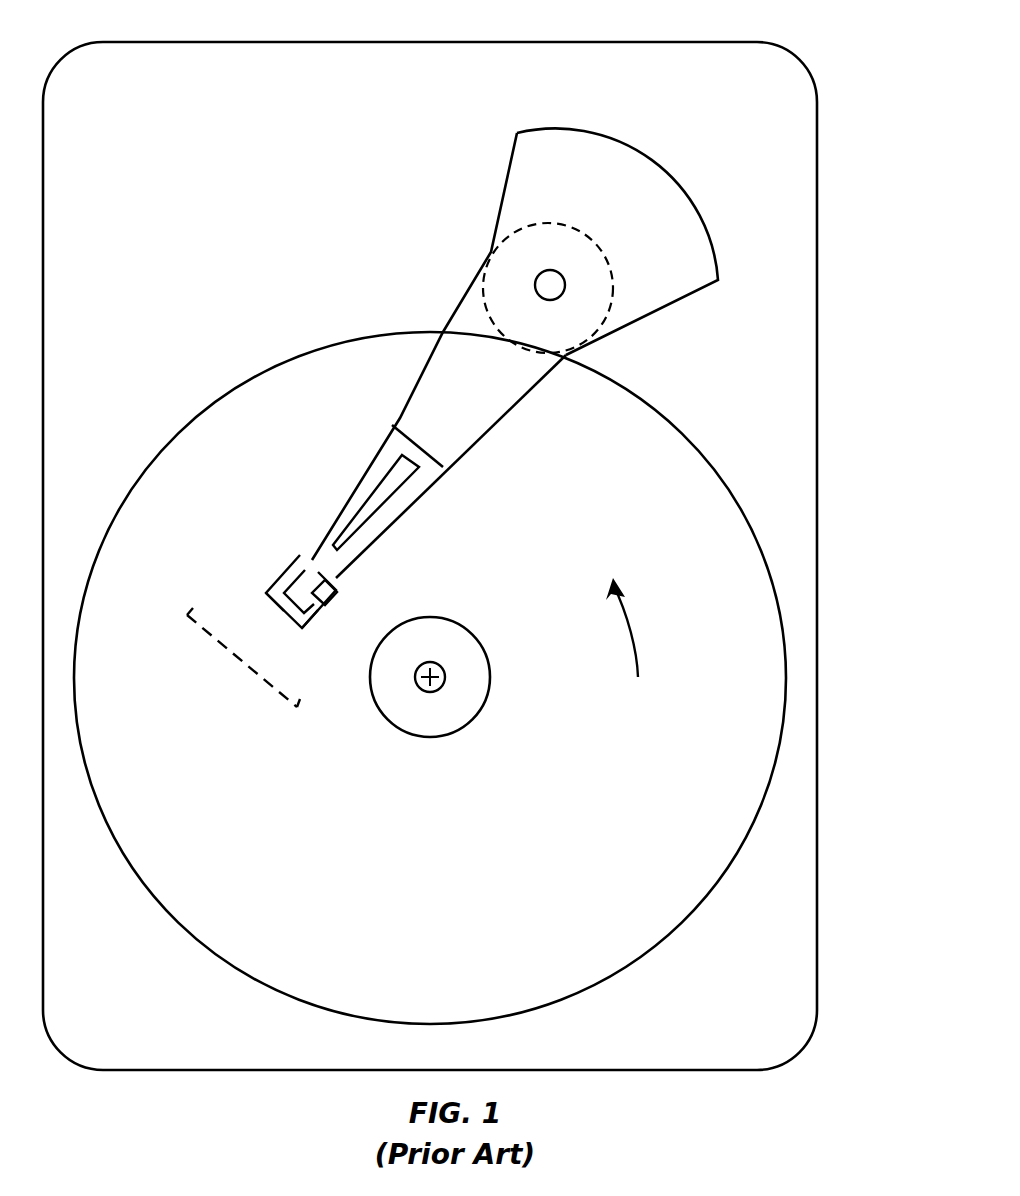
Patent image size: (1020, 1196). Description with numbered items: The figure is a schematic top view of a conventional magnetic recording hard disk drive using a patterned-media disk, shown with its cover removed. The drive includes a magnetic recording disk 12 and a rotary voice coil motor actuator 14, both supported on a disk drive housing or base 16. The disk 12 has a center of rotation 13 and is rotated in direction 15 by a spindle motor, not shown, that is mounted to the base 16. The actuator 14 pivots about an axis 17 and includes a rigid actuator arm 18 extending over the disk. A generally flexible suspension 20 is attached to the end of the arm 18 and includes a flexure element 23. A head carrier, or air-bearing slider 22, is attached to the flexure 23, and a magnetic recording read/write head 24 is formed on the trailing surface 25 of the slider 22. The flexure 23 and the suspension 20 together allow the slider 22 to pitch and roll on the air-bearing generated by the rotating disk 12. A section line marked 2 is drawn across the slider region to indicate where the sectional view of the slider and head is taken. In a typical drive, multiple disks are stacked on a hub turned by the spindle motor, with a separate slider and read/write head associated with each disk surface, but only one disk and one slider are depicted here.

The magnetic recording disk 12 is at (438, 929).
The center of rotation 13 is at (445, 670).
The rotary voice coil motor (VCM) actuator 14 is at (652, 162).
The direction of rotation 15 is at (637, 646).
The disk drive housing or base 16 is at (694, 42).
The pivot axis 17 is at (539, 285).
The rigid actuator arm 18 is at (429, 381).
The suspension 20 is at (384, 459).
The air-bearing slider 22 is at (295, 566).
The flexure element 23 is at (316, 597).
The magnetic recording read/write head 24 is at (306, 629).
The trailing surface 25 is at (275, 604).
The section line 2- 2 is at (199, 602).